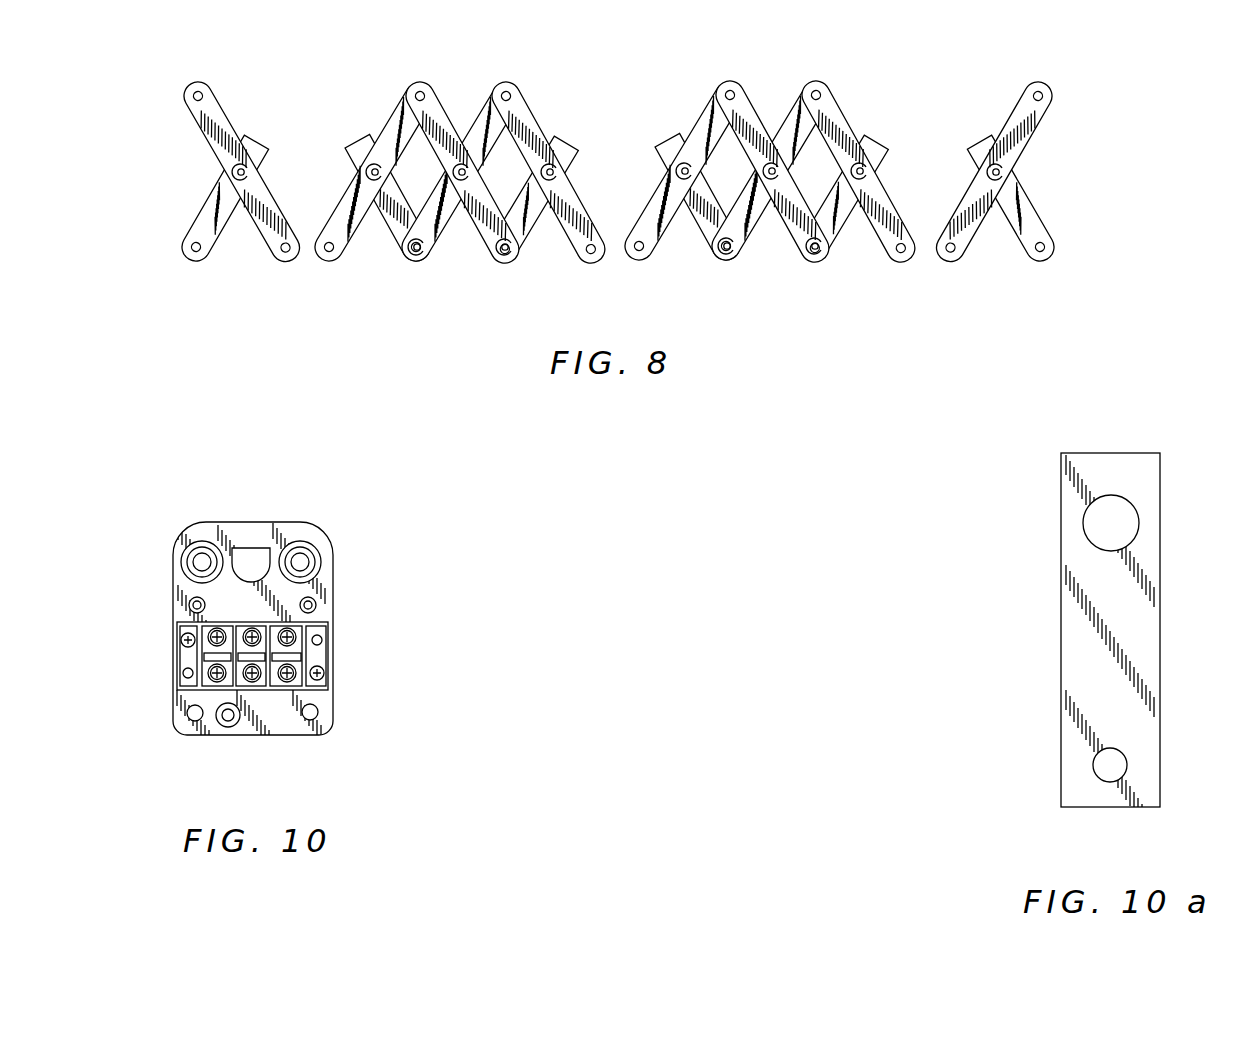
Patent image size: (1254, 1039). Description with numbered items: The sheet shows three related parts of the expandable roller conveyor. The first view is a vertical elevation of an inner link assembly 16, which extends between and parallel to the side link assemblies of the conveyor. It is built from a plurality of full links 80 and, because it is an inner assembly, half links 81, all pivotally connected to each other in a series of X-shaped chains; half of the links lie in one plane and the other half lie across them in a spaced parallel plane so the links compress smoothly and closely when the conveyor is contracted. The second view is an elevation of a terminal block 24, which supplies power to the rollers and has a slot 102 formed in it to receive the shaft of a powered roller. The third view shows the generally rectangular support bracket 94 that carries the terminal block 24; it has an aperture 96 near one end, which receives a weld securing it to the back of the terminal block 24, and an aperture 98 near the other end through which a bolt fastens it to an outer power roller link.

In FIG. 8, the inner link assembly 16 is at (1097, 72).
In FIG. 8, the full link 80 is at (263, 238).
In FIG. 8, the half link 81 is at (205, 222).
In FIG. 10, the terminal block 24 is at (302, 606).
In FIG. 10, the slot 102 is at (250, 548).
In FIG. 10A, the support bracket 94 is at (1083, 638).
In FIG. 10A, the aperture 96 is at (1095, 527).
In FIG. 10A, the aperture 98 is at (1098, 768).